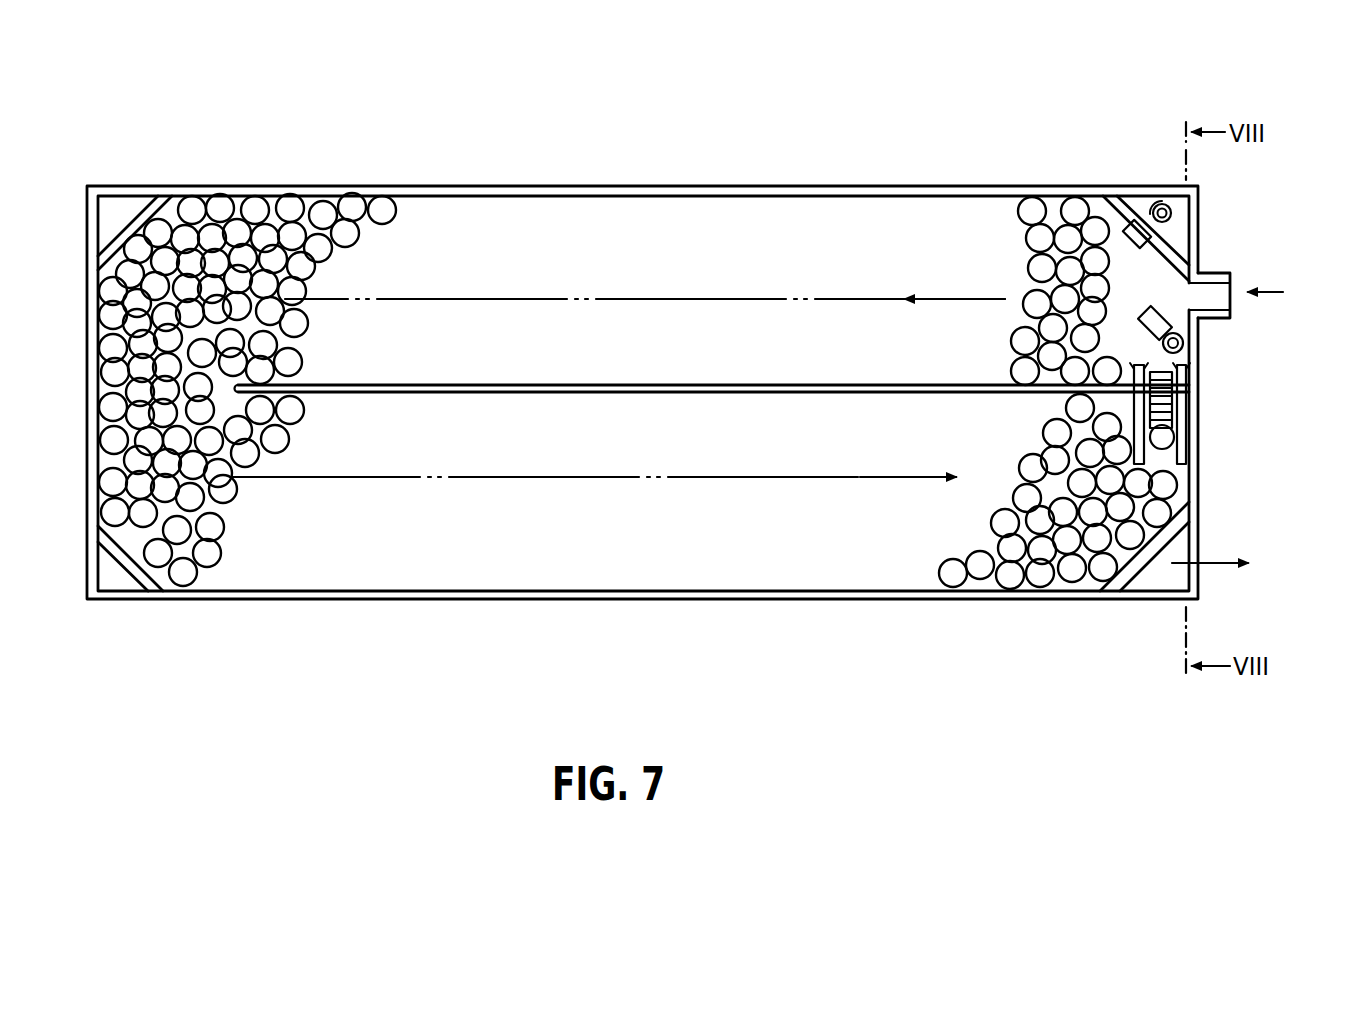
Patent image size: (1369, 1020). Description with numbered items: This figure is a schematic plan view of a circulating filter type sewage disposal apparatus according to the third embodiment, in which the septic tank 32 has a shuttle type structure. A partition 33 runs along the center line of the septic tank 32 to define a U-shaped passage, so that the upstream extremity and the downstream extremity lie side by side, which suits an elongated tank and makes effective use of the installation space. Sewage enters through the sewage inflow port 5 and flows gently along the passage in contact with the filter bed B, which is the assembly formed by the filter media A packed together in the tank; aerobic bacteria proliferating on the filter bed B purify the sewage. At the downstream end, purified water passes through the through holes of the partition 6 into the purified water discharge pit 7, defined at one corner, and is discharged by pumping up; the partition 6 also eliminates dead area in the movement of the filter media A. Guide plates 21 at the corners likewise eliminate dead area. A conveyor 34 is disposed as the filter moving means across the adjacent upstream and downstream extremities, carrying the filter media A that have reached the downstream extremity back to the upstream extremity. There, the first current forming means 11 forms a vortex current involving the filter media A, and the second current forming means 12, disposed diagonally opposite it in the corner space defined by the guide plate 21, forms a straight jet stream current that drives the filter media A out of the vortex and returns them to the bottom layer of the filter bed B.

The sewage inflow port 5 is at (1238, 290).
The partition 6 is at (1087, 577).
The purified water discharge pit 7 is at (1150, 577).
The first current forming means 11 is at (1185, 340).
The second current forming means 12 is at (1190, 206).
The guide plate 21 is at (1108, 208).
The septic tank 32 is at (752, 186).
The partition 33 is at (552, 394).
The conveyor 34 is at (1190, 392).
The filter media A is at (385, 212).
The filter bed B is at (246, 516).